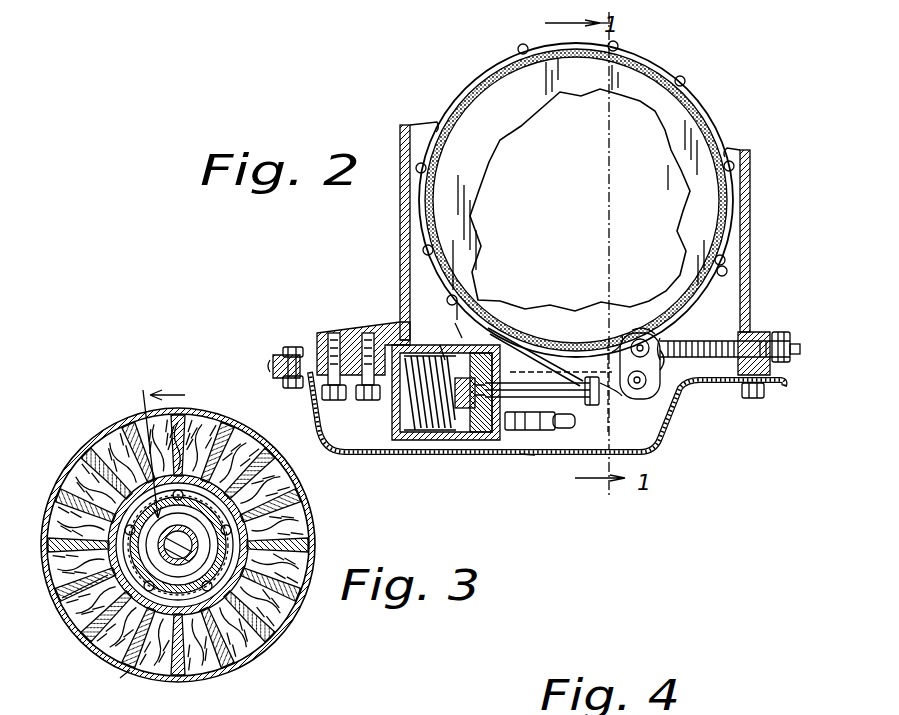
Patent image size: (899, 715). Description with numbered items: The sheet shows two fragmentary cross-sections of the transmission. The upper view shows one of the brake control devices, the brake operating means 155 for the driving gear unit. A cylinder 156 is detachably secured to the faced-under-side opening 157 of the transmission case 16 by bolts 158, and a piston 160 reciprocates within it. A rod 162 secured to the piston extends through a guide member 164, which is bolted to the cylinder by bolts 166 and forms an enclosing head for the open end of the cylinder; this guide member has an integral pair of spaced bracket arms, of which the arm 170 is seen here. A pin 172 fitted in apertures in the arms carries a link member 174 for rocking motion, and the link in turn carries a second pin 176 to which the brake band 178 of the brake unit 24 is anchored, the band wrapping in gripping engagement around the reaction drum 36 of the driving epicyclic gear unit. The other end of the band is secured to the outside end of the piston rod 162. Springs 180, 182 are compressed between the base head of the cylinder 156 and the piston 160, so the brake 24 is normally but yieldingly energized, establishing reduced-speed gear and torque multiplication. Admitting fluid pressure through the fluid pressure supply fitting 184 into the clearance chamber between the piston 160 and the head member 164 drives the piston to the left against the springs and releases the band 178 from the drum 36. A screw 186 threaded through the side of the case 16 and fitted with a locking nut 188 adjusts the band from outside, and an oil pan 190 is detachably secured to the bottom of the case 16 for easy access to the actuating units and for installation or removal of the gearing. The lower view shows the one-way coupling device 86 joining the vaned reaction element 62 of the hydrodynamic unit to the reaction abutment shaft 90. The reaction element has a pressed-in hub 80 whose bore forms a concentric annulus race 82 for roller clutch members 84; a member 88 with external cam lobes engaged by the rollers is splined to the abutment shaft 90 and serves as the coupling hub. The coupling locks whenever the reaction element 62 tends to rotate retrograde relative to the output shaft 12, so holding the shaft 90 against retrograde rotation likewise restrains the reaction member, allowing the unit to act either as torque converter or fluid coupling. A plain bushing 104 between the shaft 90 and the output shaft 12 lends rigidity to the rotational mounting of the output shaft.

In FIG. 3, the output shaft 12 is at (62, 585).
In FIG. 2, the transmission case 16 is at (394, 212).
In FIG. 2, the brake unit 24 is at (701, 100).
In FIG. 2, the reaction drum 36 is at (453, 245).
In FIG. 3, the reaction element 62 is at (95, 443).
In FIG. 3, the hub 80 is at (248, 544).
In FIG. 3, the annulus race 82 is at (222, 514).
In FIG. 3, the roller clutch members 84 is at (196, 420).
In FIG. 3, the one-way coupling device 86 is at (153, 444).
In FIG. 3, the member 88 is at (63, 507).
In FIG. 3, the reaction abutment shaft 90 is at (280, 585).
In FIG. 3, the plain bushing 104 is at (111, 682).
In FIG. 2, the brake operating means 155 is at (385, 421).
In FIG. 2, the cylinder 156 is at (498, 348).
In FIG. 2, the faced-under-side opening 157 is at (350, 402).
In FIG. 2, the bolts 158 is at (375, 333).
In FIG. 2, the piston 160 is at (440, 452).
In FIG. 2, the rod 162 is at (584, 406).
In FIG. 2, the guide member 164 is at (522, 346).
In FIG. 2, the bolts 166 is at (522, 456).
In FIG. 2, the bracket arm 170 is at (636, 400).
In FIG. 2, the pin 172 is at (672, 405).
In FIG. 2, the link member 174 is at (618, 344).
In FIG. 2, the second pin 176 is at (645, 326).
In FIG. 2, the brake band 178 is at (725, 272).
In FIG. 2, the spring 180 is at (445, 327).
In FIG. 2, the spring 182 is at (442, 350).
In FIG. 2, the fluid pressure supply fitting 184 is at (522, 431).
In FIG. 2, the screw 186 is at (712, 341).
In FIG. 2, the locking nut 188 is at (772, 372).
In FIG. 2, the oil pan 190 is at (318, 408).